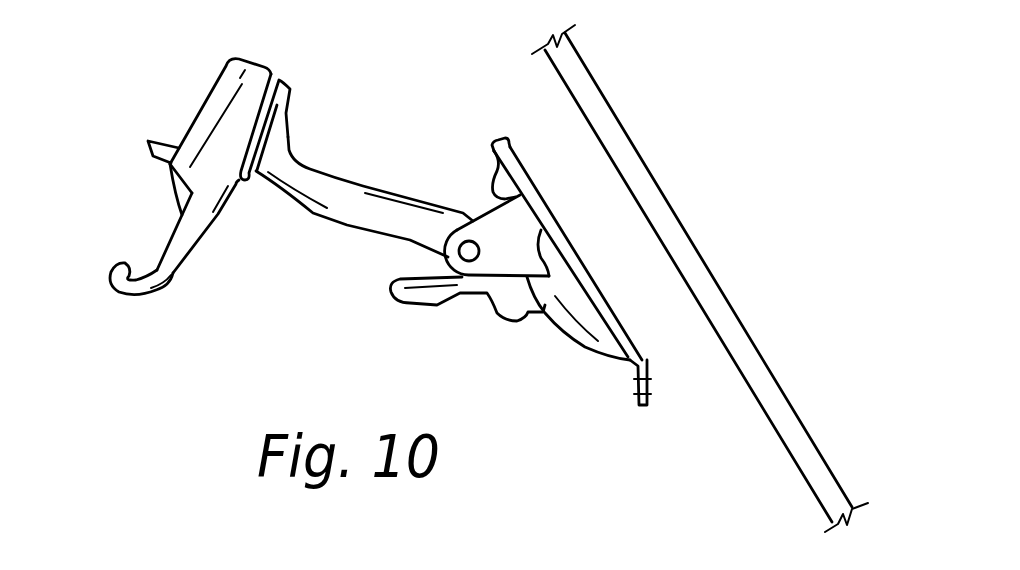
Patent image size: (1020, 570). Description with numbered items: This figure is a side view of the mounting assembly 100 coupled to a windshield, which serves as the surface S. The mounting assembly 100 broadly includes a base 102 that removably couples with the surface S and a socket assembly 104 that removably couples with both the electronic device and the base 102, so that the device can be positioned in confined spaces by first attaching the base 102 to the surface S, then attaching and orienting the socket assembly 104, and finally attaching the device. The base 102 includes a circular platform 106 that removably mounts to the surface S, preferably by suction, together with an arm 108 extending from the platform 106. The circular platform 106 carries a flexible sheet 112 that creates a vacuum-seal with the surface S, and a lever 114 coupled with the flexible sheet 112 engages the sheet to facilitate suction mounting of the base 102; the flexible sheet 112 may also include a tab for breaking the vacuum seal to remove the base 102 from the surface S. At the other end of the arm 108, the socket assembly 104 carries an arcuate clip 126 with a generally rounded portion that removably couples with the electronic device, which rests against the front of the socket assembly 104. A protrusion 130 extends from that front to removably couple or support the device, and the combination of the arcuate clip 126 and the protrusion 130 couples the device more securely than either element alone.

The mounting assembly 100 is at (367, 223).
The base 102 is at (542, 263).
The socket assembly 104 is at (165, 202).
The circular platform 106 is at (567, 332).
The arm 108 is at (323, 208).
The flexible sheet 112 is at (640, 352).
The lever 114 is at (422, 307).
The arcuate clip 126 is at (137, 292).
The protrusion 130 is at (160, 140).
The surface S is at (690, 253).